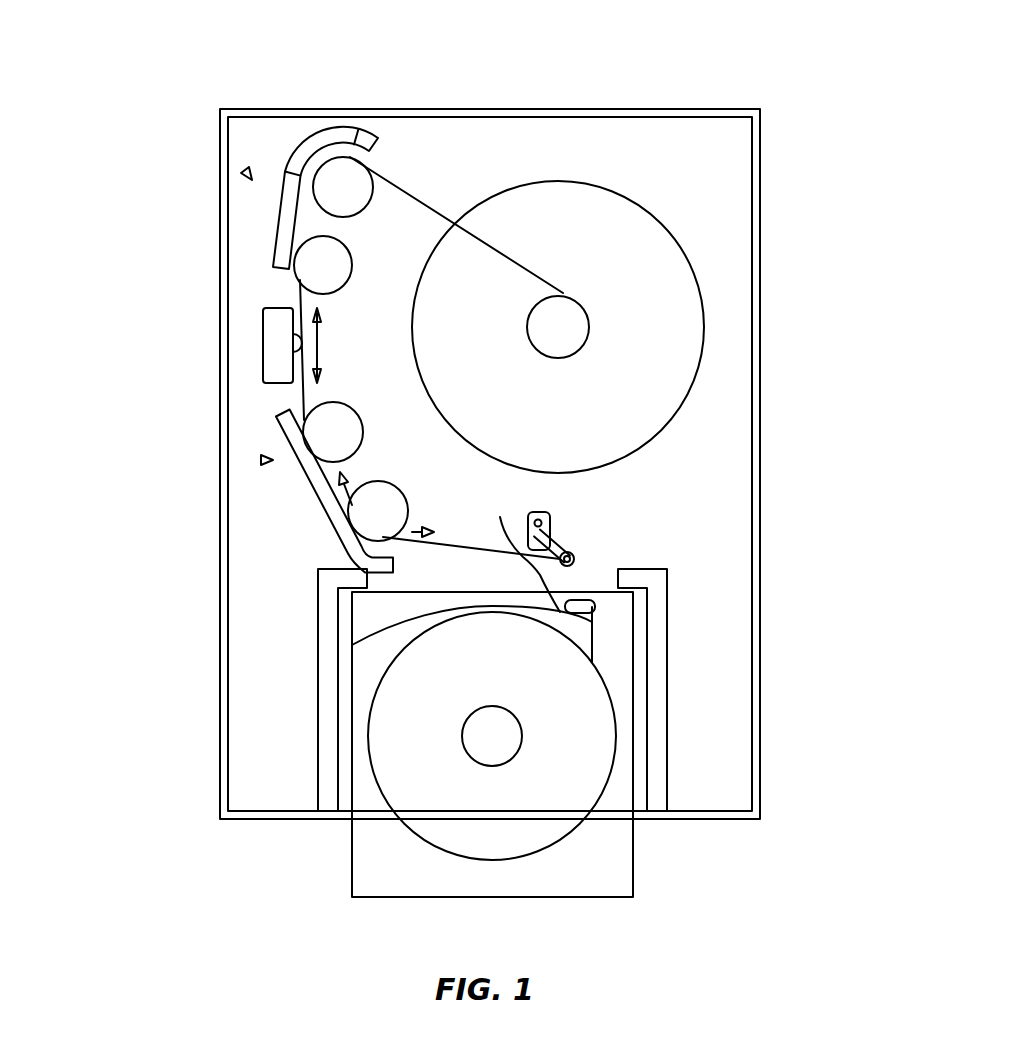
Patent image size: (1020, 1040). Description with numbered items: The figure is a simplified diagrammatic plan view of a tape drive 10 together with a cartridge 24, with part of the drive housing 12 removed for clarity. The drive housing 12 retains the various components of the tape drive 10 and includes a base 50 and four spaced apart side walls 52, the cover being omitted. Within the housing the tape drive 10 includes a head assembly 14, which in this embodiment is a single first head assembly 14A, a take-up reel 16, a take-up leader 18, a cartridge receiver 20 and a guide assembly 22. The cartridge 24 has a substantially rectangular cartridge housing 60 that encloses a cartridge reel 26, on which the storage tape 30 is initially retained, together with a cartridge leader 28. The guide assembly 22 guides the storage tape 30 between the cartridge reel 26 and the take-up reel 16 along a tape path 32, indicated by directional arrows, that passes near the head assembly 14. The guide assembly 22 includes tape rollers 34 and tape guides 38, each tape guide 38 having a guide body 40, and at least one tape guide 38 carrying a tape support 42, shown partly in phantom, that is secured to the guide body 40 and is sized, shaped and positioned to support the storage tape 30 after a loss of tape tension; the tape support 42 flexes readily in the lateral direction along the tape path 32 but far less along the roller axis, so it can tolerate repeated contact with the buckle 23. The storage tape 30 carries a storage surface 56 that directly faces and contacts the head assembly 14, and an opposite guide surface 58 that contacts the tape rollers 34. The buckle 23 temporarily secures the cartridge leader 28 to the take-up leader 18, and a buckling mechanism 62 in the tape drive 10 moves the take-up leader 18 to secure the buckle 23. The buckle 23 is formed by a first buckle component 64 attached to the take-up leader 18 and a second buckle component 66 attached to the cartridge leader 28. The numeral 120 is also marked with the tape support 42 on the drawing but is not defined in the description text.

The tape drive 10 is at (147, 52).
The drive housing 12 is at (710, 102).
The head assembly 14 is at (204, 350).
The first head assembly 14A is at (283, 365).
The take-up reel 16 is at (708, 327).
The take-up leader 18 is at (466, 546).
The cartridge receiver 20 is at (323, 680).
The guide assembly 22 is at (243, 169).
The buckle 23 is at (522, 564).
The cartridge 24 is at (572, 882).
The cartridge reel 26 is at (410, 805).
The cartridge leader 28 is at (595, 655).
The storage tape 30 is at (447, 221).
The tape path 32 is at (335, 176).
The tape roller 34 is at (368, 168).
The tape guide 38 is at (256, 328).
The guide body 40 is at (346, 168).
The tape support 42 is at (275, 323).
The guide segment 120 is at (321, 188).
The base 50 is at (727, 168).
The side wall 52 is at (756, 390).
The storage surface 56 is at (352, 645).
The guide surface 58 is at (598, 633).
The cartridge housing 60 is at (638, 868).
The buckling mechanism 62 is at (569, 533).
The first buckle component 64 is at (576, 560).
The second buckle component 66 is at (595, 607).